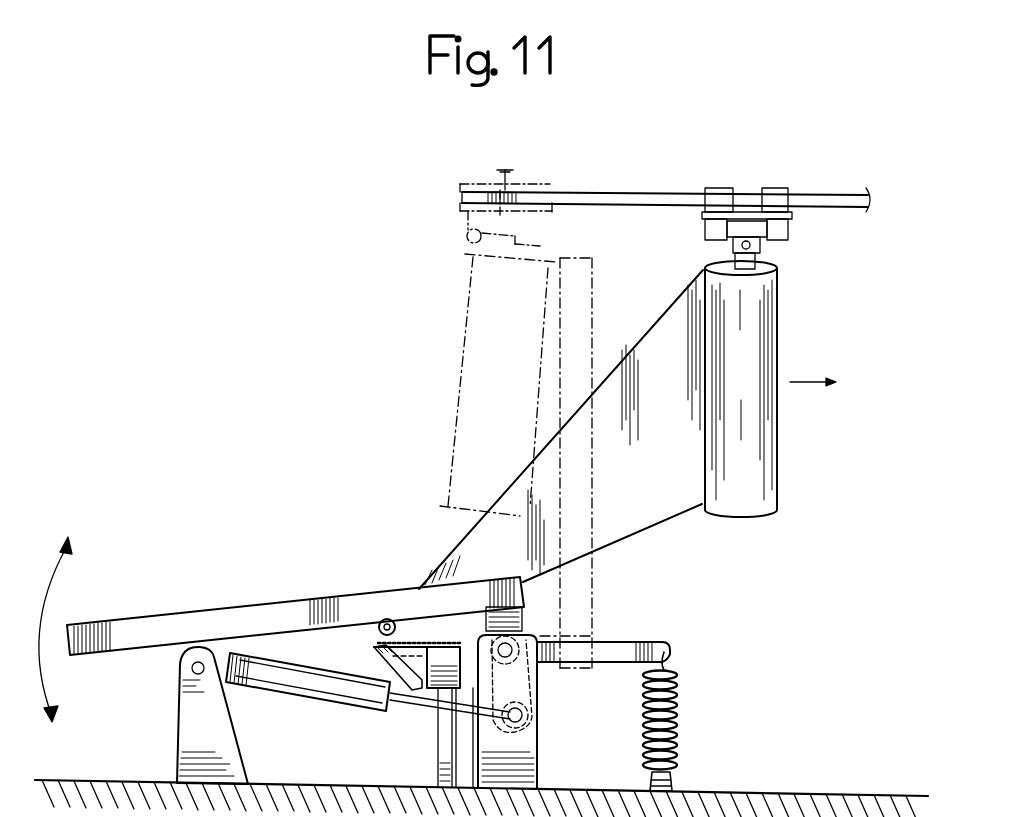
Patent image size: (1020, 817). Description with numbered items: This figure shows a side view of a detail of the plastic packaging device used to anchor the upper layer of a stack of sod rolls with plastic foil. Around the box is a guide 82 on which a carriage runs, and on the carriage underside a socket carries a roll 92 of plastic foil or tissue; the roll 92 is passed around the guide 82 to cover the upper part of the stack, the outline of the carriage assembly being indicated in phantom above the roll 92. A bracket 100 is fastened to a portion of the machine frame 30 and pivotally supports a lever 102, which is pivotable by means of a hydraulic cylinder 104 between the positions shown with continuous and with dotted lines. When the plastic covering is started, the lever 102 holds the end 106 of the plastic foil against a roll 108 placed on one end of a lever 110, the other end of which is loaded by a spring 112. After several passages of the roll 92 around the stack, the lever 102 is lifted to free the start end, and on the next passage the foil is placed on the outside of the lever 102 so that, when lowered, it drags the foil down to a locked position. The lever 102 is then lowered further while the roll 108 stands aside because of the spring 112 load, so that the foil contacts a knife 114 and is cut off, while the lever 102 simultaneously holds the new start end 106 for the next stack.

The side frame 30 is at (756, 793).
The guide 82 is at (629, 194).
The roll 92 is at (776, 320).
The bracket 100 is at (532, 750).
The lever 102 is at (187, 613).
The hydraulic cylinder 104 is at (288, 683).
The end of the plastic foil 106 is at (627, 510).
The roll 108 is at (380, 619).
The lever 110 is at (612, 648).
The spring 112 is at (684, 697).
The knife 114 is at (405, 697).